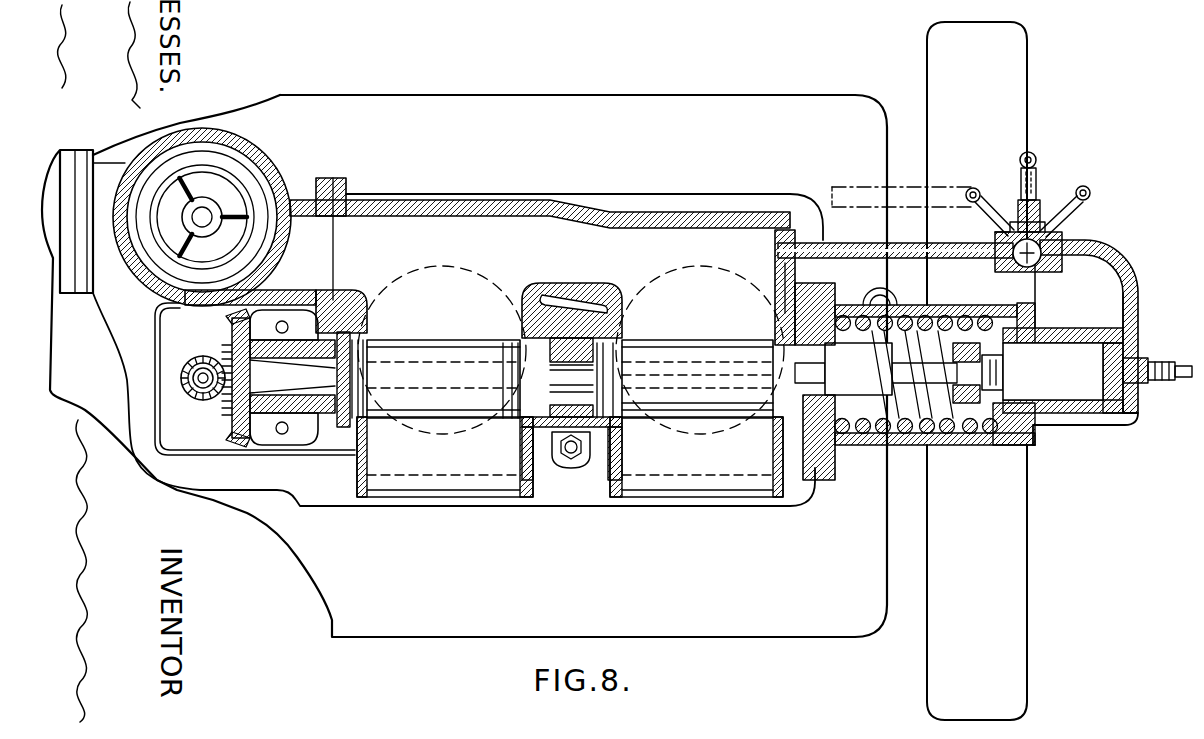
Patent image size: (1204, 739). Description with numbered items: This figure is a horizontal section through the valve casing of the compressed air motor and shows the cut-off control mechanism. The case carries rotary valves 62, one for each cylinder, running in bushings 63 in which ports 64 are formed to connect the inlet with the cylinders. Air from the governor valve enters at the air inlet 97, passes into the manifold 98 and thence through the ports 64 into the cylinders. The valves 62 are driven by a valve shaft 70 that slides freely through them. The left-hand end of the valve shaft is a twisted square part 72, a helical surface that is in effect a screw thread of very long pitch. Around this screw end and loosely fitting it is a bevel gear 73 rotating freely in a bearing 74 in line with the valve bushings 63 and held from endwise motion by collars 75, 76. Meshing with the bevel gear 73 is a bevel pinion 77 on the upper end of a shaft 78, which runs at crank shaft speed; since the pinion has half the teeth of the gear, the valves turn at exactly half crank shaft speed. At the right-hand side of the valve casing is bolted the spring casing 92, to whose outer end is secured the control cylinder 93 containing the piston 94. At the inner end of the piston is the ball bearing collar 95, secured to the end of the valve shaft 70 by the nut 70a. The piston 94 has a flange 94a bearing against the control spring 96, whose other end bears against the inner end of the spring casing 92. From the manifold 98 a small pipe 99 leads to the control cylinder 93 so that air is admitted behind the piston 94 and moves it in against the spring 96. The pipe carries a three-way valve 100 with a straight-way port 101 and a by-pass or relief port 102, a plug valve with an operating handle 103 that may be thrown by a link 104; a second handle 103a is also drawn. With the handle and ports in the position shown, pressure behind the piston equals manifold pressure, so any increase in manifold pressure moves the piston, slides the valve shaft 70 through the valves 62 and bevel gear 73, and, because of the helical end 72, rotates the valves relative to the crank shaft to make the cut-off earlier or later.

The rotary valves 62 is at (402, 366).
The bushings 63 is at (375, 422).
The ports 64 is at (461, 343).
The valve shaft 70 is at (571, 380).
The nut 70a is at (1003, 376).
The twisted square part 72 is at (233, 350).
The bevel gear 73 is at (242, 317).
The bearing 74 is at (327, 290).
The collar 75 is at (235, 423).
The collar 76 is at (316, 440).
The bevel pinion 77 is at (177, 366).
The shaft 78 is at (198, 379).
The spring casing 92 is at (891, 308).
The control cylinder 93 is at (1058, 327).
The piston 94 is at (1068, 407).
The flange 94a is at (1013, 427).
The ball bearing collar 95 is at (960, 383).
The control spring 96 is at (953, 316).
The air inlet 97 is at (451, 217).
The manifold 98 is at (464, 366).
The pipe 99 is at (1112, 267).
The three-way valve 100 is at (1067, 243).
The straight-way port 101 is at (997, 238).
The by-pass or relief port 102 is at (1042, 263).
The operating handle 103 is at (1090, 193).
The lever 103a is at (967, 188).
The link 104 is at (850, 191).